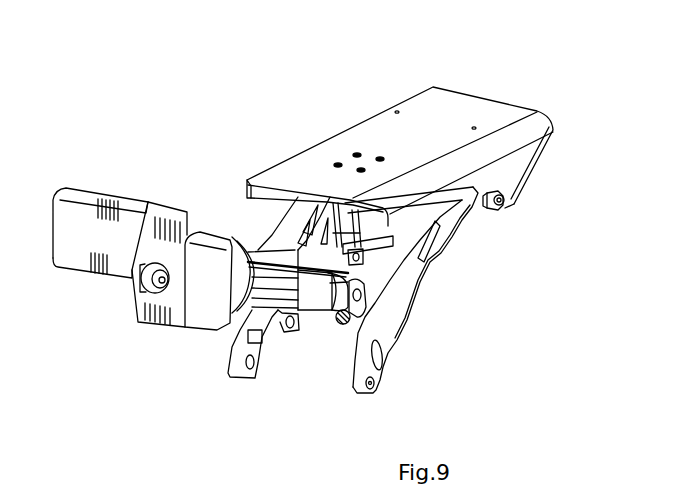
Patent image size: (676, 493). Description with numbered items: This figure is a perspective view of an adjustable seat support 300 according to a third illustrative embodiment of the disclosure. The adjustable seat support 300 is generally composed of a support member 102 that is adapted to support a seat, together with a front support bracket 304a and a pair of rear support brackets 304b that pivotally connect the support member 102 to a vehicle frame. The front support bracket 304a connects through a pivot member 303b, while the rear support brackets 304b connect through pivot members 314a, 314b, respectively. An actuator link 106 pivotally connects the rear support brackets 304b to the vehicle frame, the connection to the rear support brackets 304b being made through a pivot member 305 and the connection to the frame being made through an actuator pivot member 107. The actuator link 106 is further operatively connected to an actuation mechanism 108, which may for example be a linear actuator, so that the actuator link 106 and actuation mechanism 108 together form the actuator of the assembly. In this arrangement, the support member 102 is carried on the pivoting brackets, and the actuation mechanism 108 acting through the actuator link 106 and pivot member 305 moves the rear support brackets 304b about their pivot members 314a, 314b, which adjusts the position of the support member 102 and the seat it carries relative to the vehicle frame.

The adjustable seat support 300 is at (559, 97).
The support member 102 is at (461, 103).
The pivot member 303b is at (506, 200).
The rear support brackets 304b is at (293, 213).
The front support bracket 304a is at (360, 260).
The pivot member 305 is at (358, 311).
The pivot member 314a is at (291, 329).
The pivot member 314b is at (250, 366).
The actuation mechanism 108 is at (80, 221).
The actuator pivot member 107 is at (166, 280).
The actuator link 106 is at (250, 262).